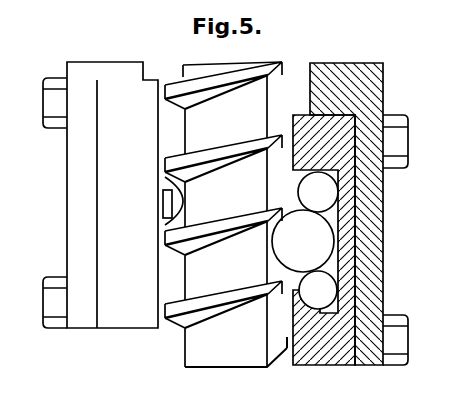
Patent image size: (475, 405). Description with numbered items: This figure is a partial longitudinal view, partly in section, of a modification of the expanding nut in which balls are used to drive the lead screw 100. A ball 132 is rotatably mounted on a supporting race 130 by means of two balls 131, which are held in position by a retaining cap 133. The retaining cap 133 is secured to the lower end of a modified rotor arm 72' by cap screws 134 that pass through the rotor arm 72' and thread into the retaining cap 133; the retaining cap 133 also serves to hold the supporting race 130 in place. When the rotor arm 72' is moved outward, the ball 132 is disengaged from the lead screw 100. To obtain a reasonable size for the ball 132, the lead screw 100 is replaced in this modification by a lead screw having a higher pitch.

The modified rotor arm 72' is at (227, 201).
The lead screw 100 is at (241, 62).
The supporting race 130 is at (333, 240).
The balls 131 is at (328, 186).
The ball 132 is at (162, 188).
The retaining cap 133 is at (147, 88).
The cap screws 134 is at (47, 103).